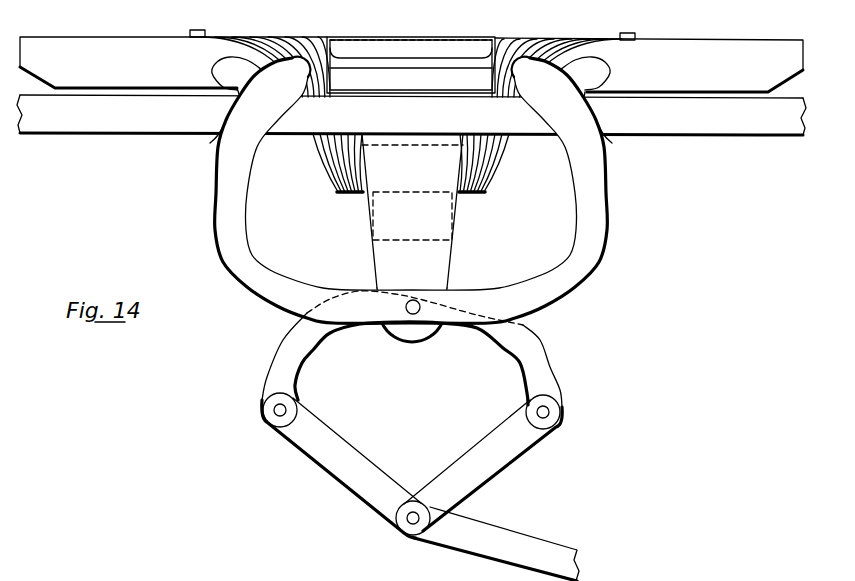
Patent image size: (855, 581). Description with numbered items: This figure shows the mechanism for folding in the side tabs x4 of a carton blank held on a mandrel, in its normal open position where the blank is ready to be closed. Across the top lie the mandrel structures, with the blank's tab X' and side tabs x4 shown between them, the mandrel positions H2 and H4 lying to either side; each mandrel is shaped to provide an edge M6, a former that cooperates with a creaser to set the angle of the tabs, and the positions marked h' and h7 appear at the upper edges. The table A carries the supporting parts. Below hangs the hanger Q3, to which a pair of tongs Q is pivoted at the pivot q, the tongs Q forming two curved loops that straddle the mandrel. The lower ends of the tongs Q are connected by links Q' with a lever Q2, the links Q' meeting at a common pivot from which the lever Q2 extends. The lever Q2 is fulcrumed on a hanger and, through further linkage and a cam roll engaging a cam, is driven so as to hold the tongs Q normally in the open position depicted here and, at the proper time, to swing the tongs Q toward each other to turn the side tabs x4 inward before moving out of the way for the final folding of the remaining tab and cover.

The mandrel position H2 is at (108, 41).
The opposite mandrel H4 is at (703, 46).
The left lug on guide plate h' is at (198, 19).
The right lug on guide plate h7 is at (631, 26).
The fiber bundle / strands H is at (336, 170).
The edge of mandrel M6 is at (166, 153).
The tab X' is at (411, 64).
The side tabs x4 is at (333, 82).
The table A is at (740, 132).
The tongs Q is at (412, 232).
The hanger Q3 is at (440, 248).
The pivot q is at (414, 300).
The links Q' is at (412, 465).
The lever Q2 is at (498, 531).